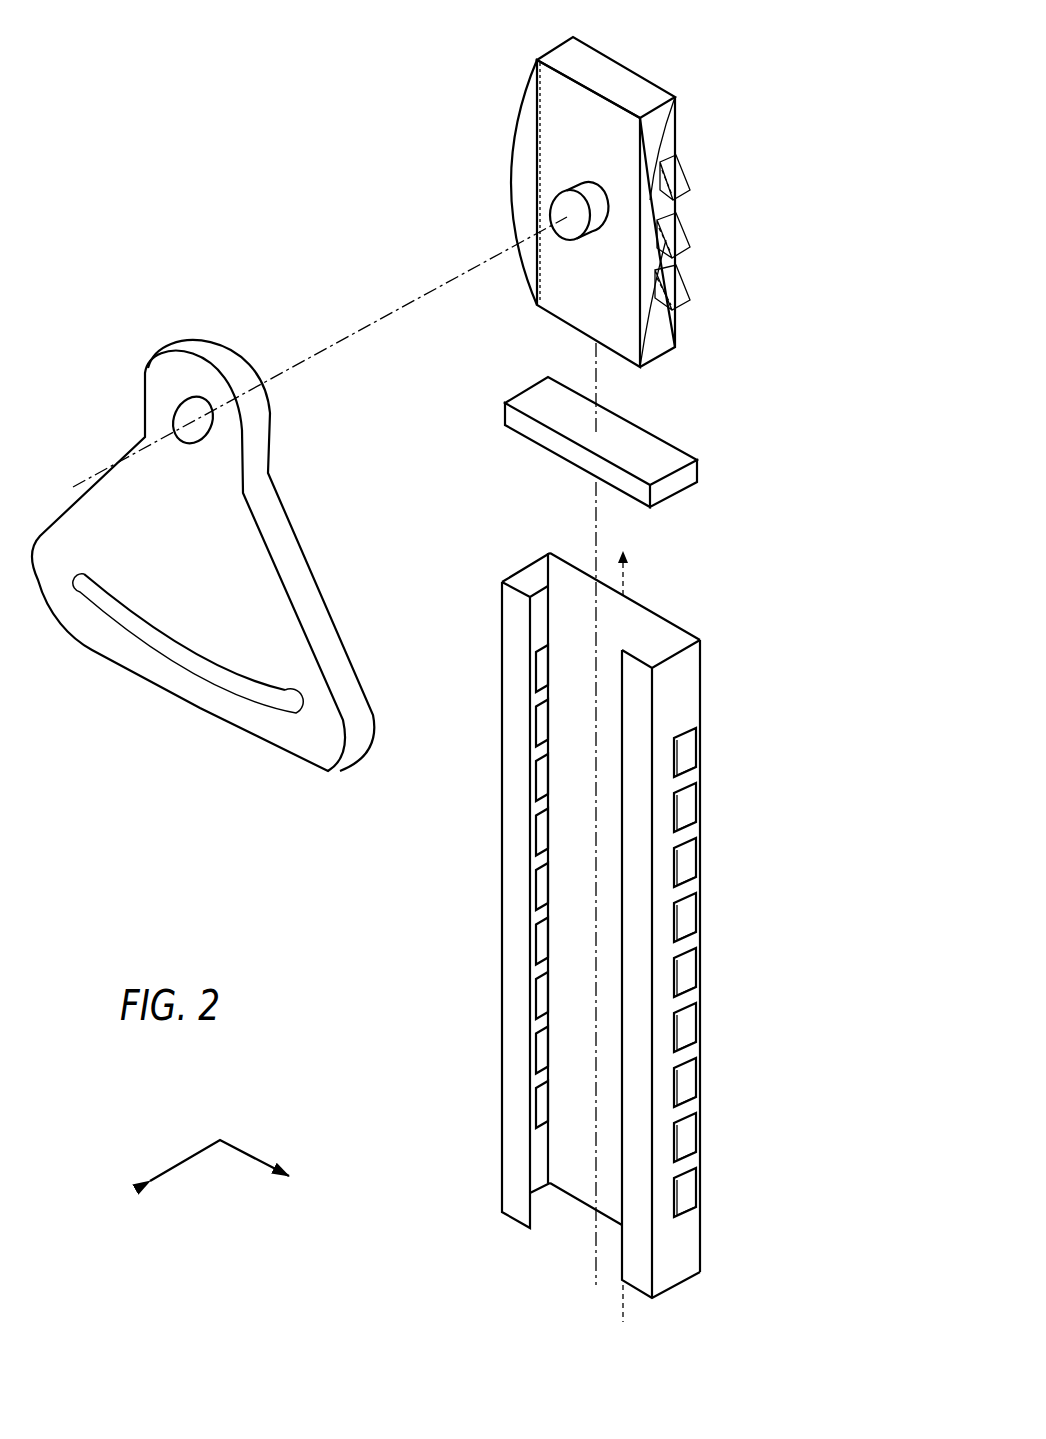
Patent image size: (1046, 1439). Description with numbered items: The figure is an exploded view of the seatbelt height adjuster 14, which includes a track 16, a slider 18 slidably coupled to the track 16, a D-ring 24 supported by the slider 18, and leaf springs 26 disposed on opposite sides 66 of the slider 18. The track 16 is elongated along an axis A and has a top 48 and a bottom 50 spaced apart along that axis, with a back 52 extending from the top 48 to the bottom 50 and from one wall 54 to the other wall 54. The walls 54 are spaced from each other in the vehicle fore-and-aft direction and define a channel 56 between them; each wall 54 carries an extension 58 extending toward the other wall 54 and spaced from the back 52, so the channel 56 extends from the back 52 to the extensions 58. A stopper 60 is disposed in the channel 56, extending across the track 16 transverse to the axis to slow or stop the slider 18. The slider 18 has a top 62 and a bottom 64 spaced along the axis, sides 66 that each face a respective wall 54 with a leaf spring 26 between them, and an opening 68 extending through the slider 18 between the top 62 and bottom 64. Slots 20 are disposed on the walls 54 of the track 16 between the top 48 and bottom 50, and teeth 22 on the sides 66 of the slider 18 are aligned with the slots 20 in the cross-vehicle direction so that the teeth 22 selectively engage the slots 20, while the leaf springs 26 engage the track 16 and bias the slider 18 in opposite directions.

The seatbelt height adjuster 14 is at (189, 148).
The track 16 is at (705, 1236).
The slider 18 is at (663, 80).
The slots 20 is at (537, 777).
The teeth 22 is at (688, 302).
The D-ring 24 is at (134, 676).
The leaf springs 26 is at (514, 150).
The top 48 is at (662, 615).
The bottom 50 is at (513, 1220).
The back 52 is at (583, 630).
The walls 54 is at (529, 581).
The channel 56 is at (542, 582).
The extensions 58 is at (513, 615).
The stopper 60 is at (700, 478).
The top 62 is at (601, 51).
The bottom 64 is at (546, 313).
The sides 66 is at (679, 127).
The opening 68 is at (563, 210).